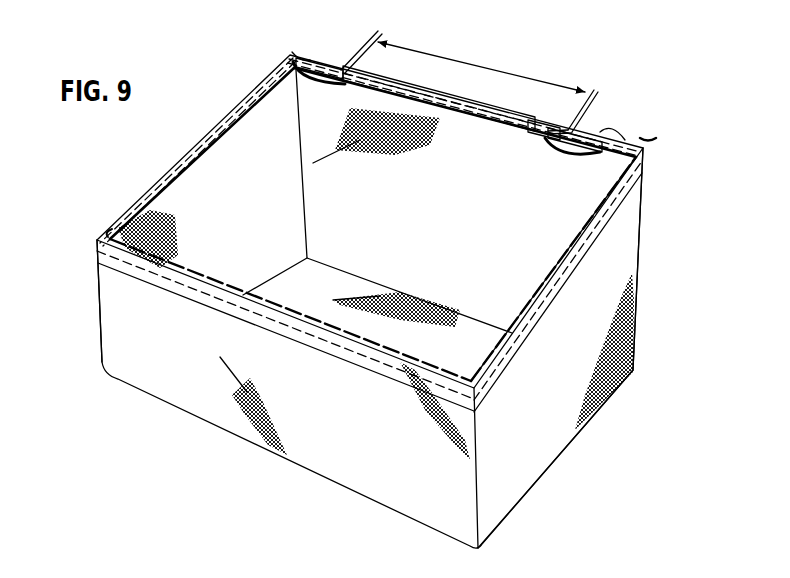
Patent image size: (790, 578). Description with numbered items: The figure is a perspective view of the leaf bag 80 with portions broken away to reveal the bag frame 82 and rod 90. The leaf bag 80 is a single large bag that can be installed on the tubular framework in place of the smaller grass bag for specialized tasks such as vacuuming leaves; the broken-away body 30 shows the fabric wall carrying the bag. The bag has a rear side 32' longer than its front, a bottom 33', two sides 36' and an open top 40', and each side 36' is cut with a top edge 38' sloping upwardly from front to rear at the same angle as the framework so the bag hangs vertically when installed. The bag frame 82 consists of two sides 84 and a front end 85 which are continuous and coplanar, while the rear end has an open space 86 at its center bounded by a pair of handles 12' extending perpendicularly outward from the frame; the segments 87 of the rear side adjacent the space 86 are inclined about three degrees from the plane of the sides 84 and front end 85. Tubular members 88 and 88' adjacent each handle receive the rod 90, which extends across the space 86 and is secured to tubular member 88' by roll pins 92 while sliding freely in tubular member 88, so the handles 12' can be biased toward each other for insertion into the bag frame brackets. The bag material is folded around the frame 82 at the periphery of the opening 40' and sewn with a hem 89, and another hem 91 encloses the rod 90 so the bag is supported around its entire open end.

The handle 12' is at (487, 68).
The container body 30 is at (167, 368).
The rear side 32' is at (634, 351).
The bottom 33' is at (248, 422).
The side 36' is at (343, 394).
The top edge 38' is at (369, 240).
The open top 40' is at (315, 201).
The leaf bag 80 is at (637, 358).
The bag frame 82 is at (592, 243).
The side 84 is at (225, 122).
The front end 85 is at (284, 313).
The open space 86 is at (468, 64).
The segment 87 is at (304, 57).
The tubular member 88 is at (319, 55).
The tubular member 88' is at (569, 168).
The hem 89 is at (346, 88).
The rod 90 is at (550, 124).
The hem 91 is at (460, 128).
The roll pin 92 is at (560, 150).